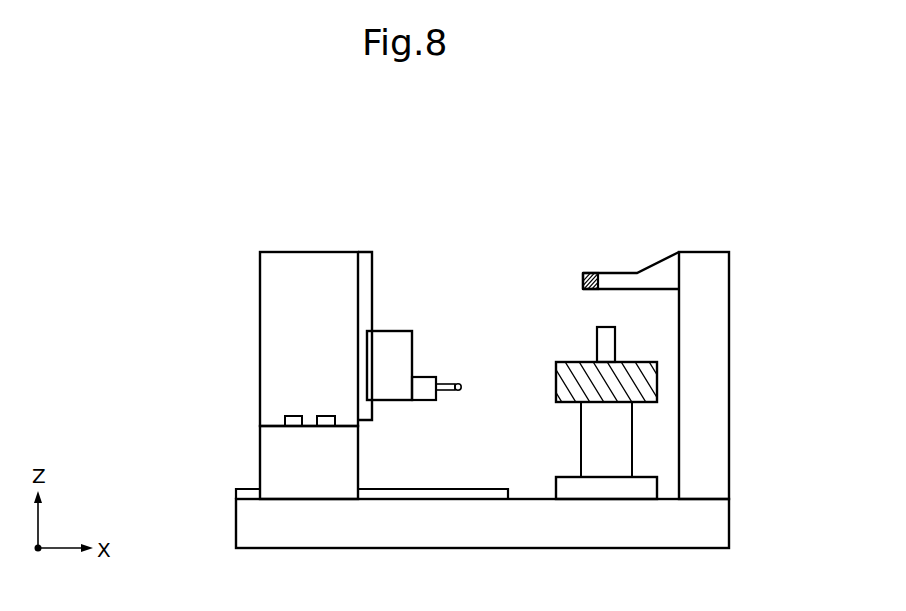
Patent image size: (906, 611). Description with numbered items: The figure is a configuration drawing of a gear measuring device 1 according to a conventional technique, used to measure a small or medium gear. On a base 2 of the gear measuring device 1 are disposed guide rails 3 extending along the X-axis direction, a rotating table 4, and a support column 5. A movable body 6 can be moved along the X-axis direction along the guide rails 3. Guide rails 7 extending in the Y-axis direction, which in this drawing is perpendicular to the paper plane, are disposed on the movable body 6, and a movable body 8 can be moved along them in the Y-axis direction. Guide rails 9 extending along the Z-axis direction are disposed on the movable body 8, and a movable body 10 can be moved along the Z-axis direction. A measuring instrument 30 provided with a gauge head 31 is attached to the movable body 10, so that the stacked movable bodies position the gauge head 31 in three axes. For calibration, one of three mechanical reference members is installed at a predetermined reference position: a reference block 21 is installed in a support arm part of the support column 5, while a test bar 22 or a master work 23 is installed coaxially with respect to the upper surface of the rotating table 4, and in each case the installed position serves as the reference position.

The gear measuring device 1 is at (492, 197).
The base 2 is at (718, 523).
The guide rails 3 is at (407, 495).
The rotating table 4 is at (578, 488).
The support column 5 is at (718, 393).
The movable body 6 is at (273, 453).
The guide rails 7 is at (322, 421).
The movable body 8 is at (277, 292).
The guide rails 9 is at (367, 262).
The movable body 10 is at (398, 337).
The reference block 21 is at (588, 273).
The test bar 22 is at (603, 338).
The master work 23 is at (557, 377).
The measuring instrument 30 is at (423, 393).
The gauge head 31 is at (447, 392).